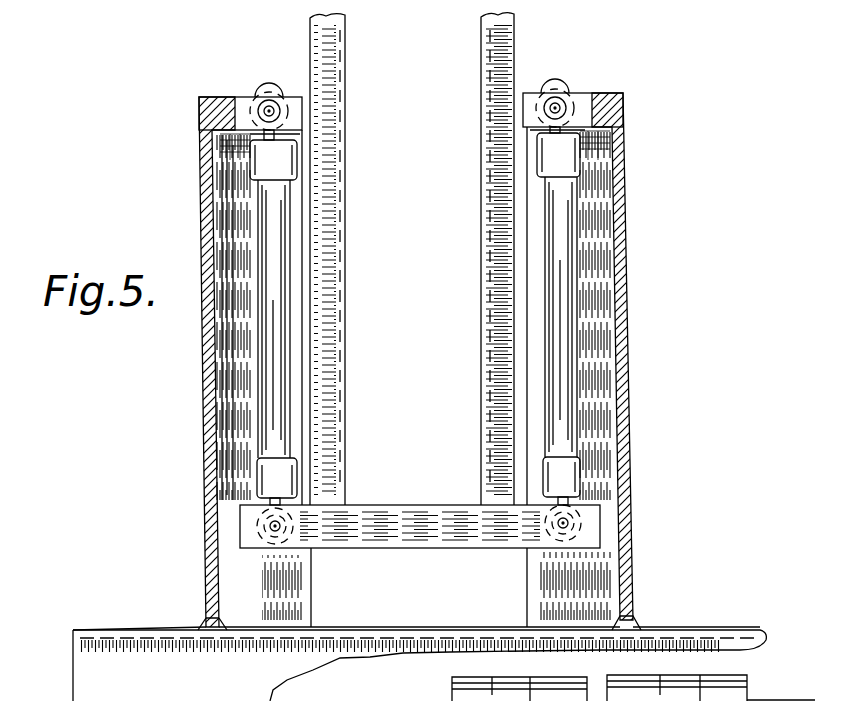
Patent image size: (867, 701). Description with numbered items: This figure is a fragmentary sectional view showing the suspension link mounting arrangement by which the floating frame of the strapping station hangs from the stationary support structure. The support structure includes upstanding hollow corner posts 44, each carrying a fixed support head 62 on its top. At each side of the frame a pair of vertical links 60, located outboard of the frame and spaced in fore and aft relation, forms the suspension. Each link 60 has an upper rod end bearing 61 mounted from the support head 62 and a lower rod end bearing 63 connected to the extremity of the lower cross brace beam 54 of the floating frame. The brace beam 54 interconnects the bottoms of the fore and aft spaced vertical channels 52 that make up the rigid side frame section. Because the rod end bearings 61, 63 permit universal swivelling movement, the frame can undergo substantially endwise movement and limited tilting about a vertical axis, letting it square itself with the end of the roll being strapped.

The corner post 44 is at (627, 175).
The vertical channel 52 is at (338, 62).
The brace beam 54 is at (458, 527).
The vertical link 60 is at (275, 316).
The upper rod end bearing 61 is at (292, 136).
The support head 62 is at (213, 97).
The lower rod end bearing 63 is at (273, 502).